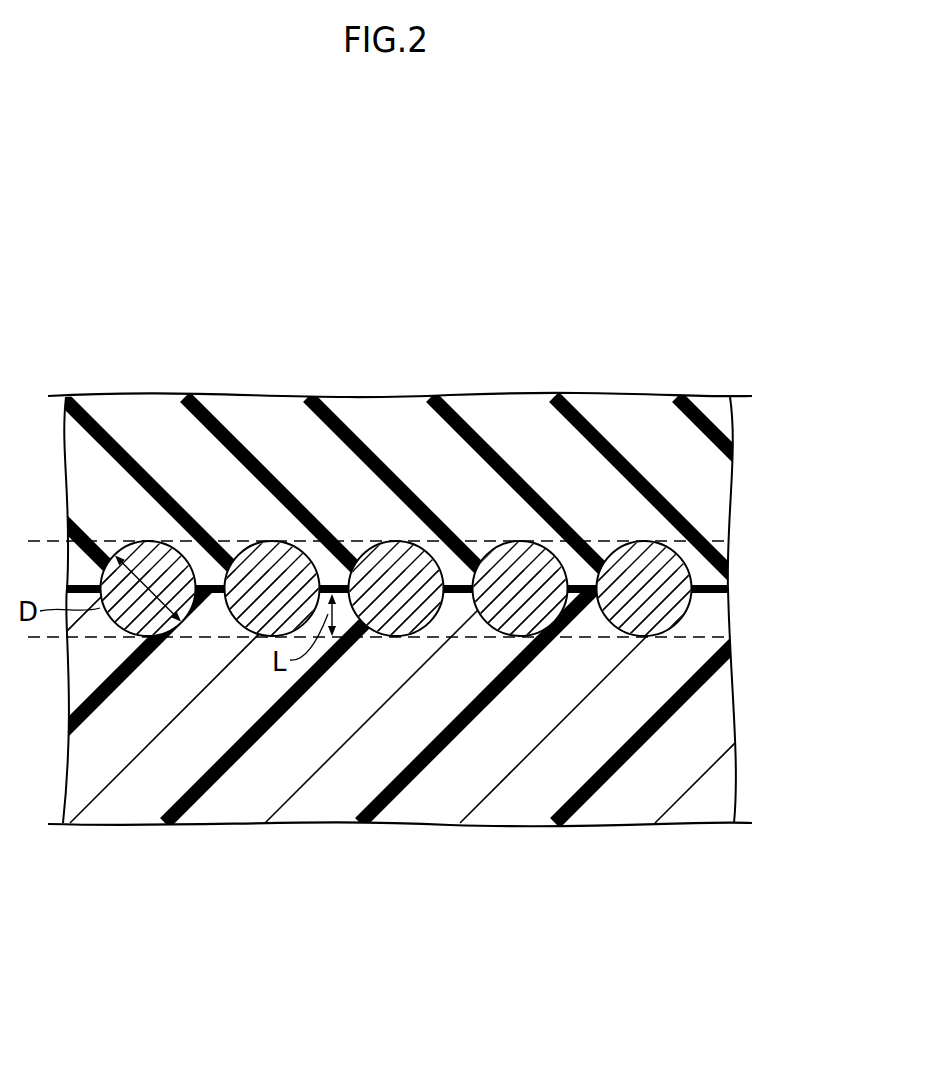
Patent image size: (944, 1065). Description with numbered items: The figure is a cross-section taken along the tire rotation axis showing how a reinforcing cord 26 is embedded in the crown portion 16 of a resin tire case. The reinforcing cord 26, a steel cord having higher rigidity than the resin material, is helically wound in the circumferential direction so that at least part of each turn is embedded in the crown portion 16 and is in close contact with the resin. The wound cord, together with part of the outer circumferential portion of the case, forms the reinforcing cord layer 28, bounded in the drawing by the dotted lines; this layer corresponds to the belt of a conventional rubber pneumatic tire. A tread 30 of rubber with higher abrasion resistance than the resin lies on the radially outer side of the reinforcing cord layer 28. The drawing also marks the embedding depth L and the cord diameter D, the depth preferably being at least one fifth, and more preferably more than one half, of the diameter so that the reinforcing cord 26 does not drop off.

The crown portion 16 is at (505, 812).
The reinforcing cord 26 is at (123, 543).
The reinforcing cord layer 28 is at (350, 537).
The tread 30 is at (617, 410).